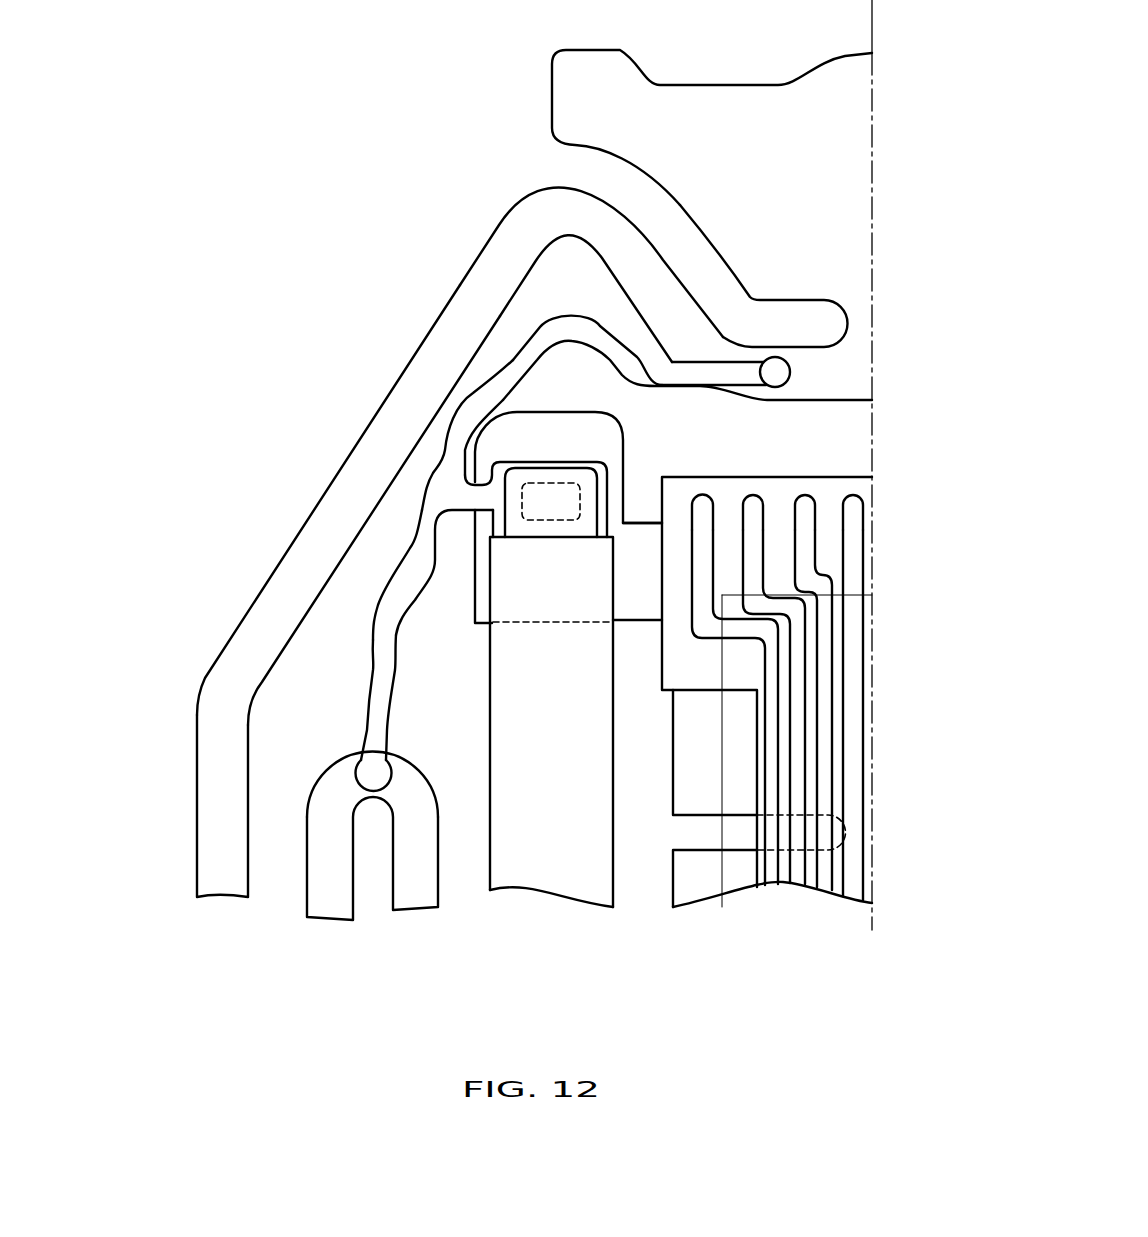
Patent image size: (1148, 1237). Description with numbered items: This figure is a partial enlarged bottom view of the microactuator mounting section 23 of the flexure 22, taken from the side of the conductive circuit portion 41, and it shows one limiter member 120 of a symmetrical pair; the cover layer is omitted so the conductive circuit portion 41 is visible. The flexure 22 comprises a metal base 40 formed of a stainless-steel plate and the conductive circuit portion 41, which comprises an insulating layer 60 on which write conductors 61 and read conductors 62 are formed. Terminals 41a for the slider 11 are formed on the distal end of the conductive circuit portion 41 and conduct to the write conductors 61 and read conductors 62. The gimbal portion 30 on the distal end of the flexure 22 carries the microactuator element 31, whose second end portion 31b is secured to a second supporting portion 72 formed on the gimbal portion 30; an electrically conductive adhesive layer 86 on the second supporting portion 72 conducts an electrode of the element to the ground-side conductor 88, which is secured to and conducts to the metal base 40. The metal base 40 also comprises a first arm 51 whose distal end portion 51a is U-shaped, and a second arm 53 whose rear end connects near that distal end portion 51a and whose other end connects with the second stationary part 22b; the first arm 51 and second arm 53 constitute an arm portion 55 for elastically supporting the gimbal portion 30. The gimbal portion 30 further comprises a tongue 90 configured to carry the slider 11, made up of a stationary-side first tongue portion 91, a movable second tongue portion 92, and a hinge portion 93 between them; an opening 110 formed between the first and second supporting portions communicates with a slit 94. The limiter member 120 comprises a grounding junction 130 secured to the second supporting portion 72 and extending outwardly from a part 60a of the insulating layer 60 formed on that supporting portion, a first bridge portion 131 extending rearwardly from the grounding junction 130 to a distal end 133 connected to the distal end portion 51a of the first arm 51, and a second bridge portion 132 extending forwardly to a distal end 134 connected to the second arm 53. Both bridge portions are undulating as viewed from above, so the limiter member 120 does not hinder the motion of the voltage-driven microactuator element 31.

The slider 11 is at (722, 735).
The flexure 22 is at (222, 930).
The second stationary part 22b is at (742, 117).
The microactuator mounting section 23 is at (481, 113).
The gimbal portion 30 is at (848, 450).
The microactuator element 31 is at (558, 855).
The second end portion 31b is at (507, 568).
The metal base 40 is at (637, 543).
The conductive circuit portion 41 is at (800, 950).
The terminals 41a is at (857, 502).
The first arm 51 is at (333, 907).
The distal end portion 51a is at (340, 755).
The second arm 53 is at (528, 220).
The arm portion 55 is at (196, 689).
The insulating layer 60 is at (680, 490).
The part of the insulating layer 60a is at (507, 435).
The write conductors 61 is at (820, 887).
The read conductors 62 is at (797, 880).
The second supporting portion 72 is at (457, 432).
The adhesive layer 86 is at (583, 478).
The ground-side conductor 88 is at (556, 497).
The tongue 90 is at (658, 884).
The first tongue portion 91 is at (692, 890).
The second tongue portion 92 is at (687, 717).
The hinge portion 93 is at (852, 830).
The slit 94 is at (705, 852).
The opening 110 is at (466, 882).
The limiter member 120 is at (409, 560).
The grounding junction 130 is at (470, 498).
The first bridge portion 131 is at (382, 663).
The second bridge portion 132 is at (547, 337).
The distal end of the first bridge portion 133 is at (375, 773).
The distal end of the second bridge portion 134 is at (775, 370).